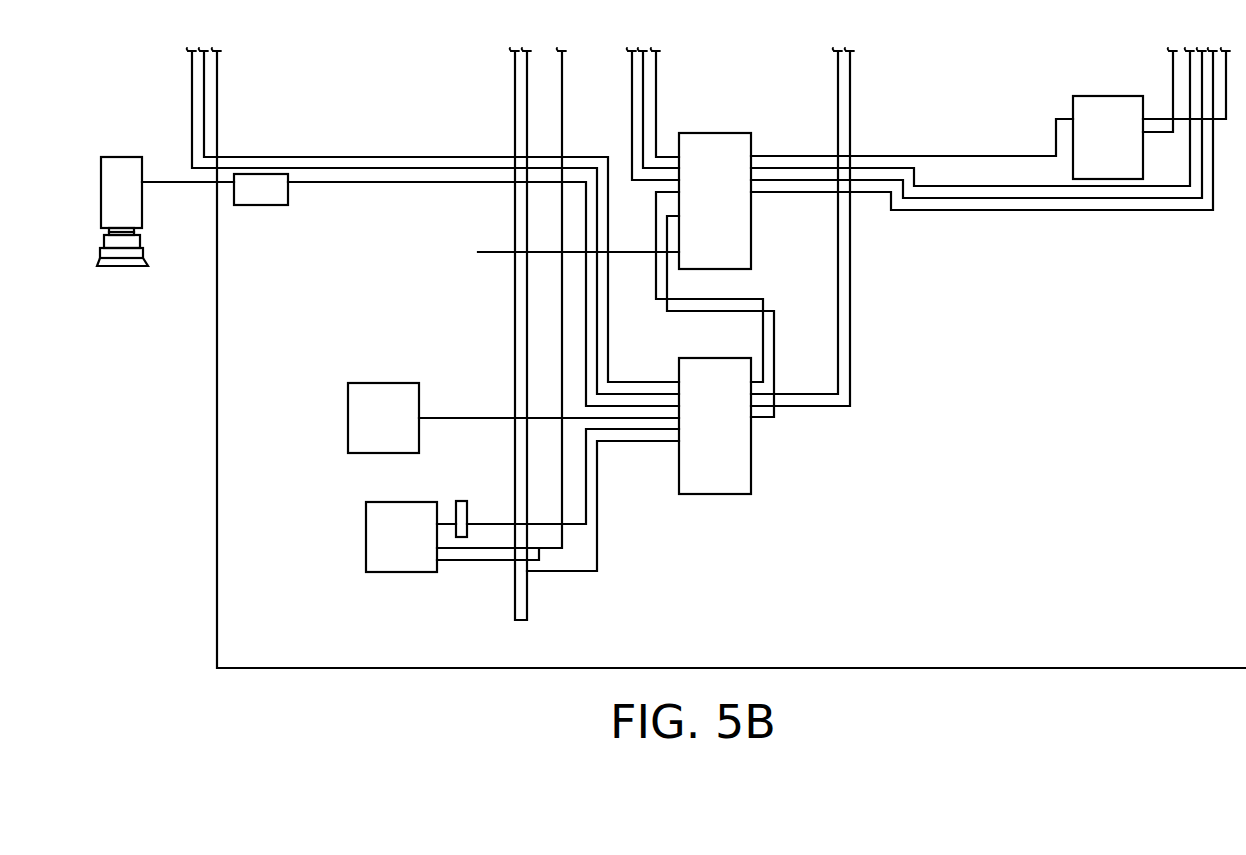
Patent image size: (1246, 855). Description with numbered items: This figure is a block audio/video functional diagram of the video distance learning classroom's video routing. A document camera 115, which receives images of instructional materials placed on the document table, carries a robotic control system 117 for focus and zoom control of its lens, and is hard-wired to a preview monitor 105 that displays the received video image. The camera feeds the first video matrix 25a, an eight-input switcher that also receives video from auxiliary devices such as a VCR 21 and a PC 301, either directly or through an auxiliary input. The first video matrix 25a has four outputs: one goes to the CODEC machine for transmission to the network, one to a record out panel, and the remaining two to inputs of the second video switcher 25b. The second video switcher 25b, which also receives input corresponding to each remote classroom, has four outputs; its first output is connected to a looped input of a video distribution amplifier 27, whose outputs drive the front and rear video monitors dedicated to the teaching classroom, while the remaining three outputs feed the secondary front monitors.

The document camera 115 is at (100, 186).
The robotic control system 117 is at (98, 253).
The preview monitor 105 is at (265, 197).
The second video switcher 25b is at (744, 223).
The first video matrix 25a is at (746, 453).
The PC 301 is at (352, 411).
The VCR 21 is at (375, 537).
The video distribution amplifier 27 is at (1079, 106).